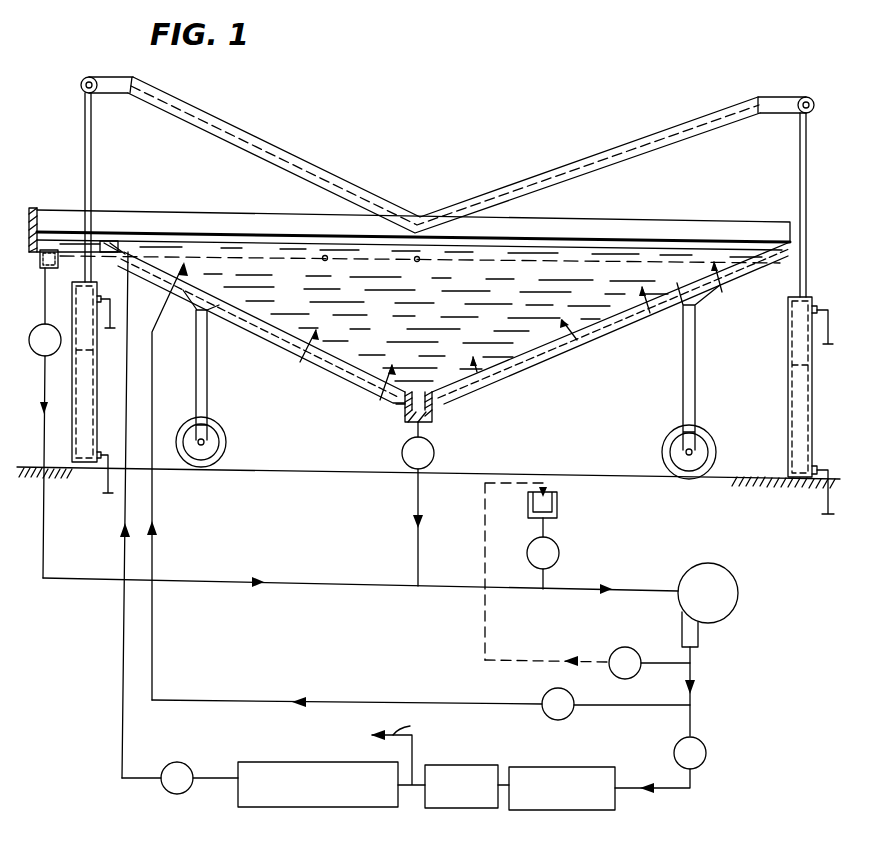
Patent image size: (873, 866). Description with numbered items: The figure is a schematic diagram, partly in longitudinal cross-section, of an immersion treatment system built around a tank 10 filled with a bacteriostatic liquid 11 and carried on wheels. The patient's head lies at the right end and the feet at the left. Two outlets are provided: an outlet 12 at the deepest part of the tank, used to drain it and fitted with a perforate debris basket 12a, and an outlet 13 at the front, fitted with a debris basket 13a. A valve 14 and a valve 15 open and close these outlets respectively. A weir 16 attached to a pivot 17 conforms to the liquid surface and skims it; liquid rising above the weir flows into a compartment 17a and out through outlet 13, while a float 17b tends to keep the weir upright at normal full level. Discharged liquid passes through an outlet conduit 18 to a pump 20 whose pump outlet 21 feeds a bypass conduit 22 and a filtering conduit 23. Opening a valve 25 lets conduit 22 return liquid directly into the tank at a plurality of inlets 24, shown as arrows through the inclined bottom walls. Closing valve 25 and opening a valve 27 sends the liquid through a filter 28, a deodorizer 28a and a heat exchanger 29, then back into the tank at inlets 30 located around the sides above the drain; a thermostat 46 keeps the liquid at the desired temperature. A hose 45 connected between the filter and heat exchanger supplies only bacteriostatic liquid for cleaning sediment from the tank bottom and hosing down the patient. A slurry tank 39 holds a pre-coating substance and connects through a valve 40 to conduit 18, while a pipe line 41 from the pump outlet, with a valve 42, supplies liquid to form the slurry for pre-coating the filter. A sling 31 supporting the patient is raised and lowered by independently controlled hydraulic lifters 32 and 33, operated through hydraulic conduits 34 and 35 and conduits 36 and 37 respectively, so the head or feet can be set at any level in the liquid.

The tank 10 is at (688, 221).
The bacteriostatic liquid 11 is at (578, 240).
The outlet 12 is at (433, 417).
The debris basket 12a is at (406, 406).
The outlet 13 is at (42, 269).
The debris basket 13a is at (43, 247).
The valve 14 is at (437, 456).
The valve 15 is at (35, 353).
The weir 16 is at (110, 242).
The pivot 17 is at (112, 246).
The compartment 17a is at (68, 247).
The float 17b is at (100, 247).
The outlet conduit 18 is at (448, 586).
The pump 20 is at (717, 562).
The pump outlet 21 is at (700, 636).
The bypass conduit 22 is at (651, 708).
The filtering conduit 23 is at (692, 722).
The inlets 24 is at (252, 300).
The valve 25 is at (549, 696).
The valve 27 is at (707, 761).
The filter 28 is at (585, 811).
The deodorizer 28a is at (455, 809).
The heat exchanger 29 is at (300, 761).
The inlets 30 is at (528, 263).
The sling 31 is at (305, 163).
The hydraulic lifter 32 is at (82, 153).
The hydraulic lifter 33 is at (798, 166).
The hydraulic conduit 34 is at (110, 303).
The hydraulic conduit 35 is at (106, 483).
The hydraulic conduit 36 is at (829, 312).
The hydraulic conduit 37 is at (818, 498).
The slurry tank 39 is at (558, 507).
The valve 40 is at (561, 552).
The pipe line 41 is at (659, 662).
The valve 42 is at (612, 650).
The hose 45 is at (413, 749).
The thermostat 46 is at (186, 766).